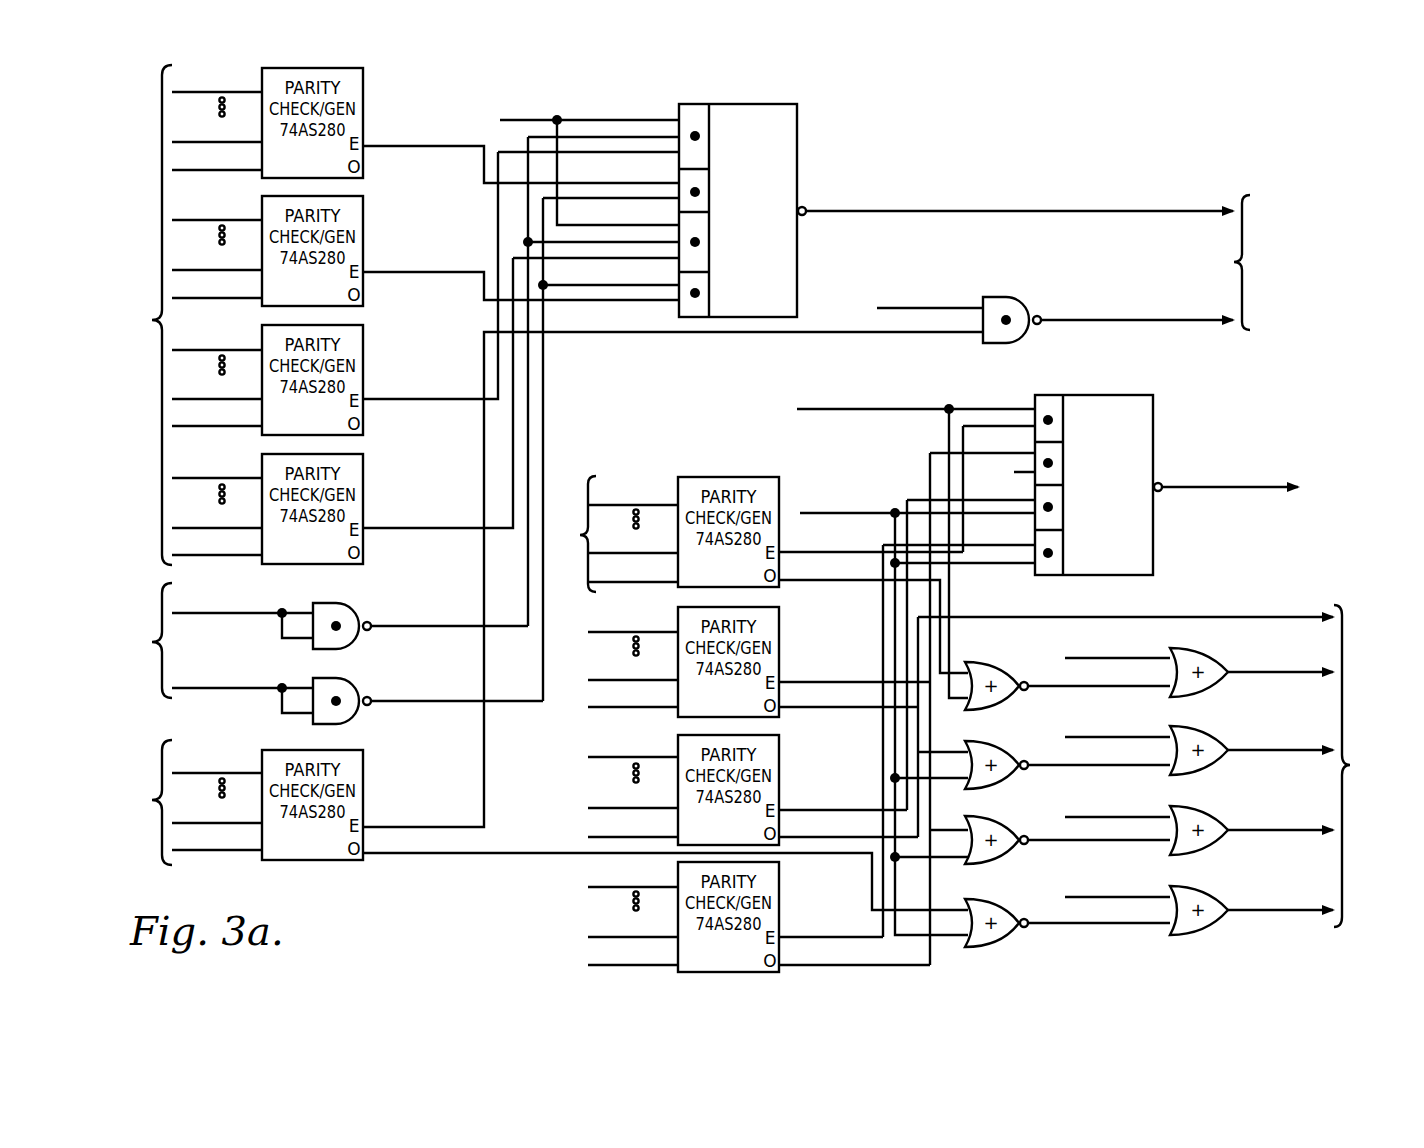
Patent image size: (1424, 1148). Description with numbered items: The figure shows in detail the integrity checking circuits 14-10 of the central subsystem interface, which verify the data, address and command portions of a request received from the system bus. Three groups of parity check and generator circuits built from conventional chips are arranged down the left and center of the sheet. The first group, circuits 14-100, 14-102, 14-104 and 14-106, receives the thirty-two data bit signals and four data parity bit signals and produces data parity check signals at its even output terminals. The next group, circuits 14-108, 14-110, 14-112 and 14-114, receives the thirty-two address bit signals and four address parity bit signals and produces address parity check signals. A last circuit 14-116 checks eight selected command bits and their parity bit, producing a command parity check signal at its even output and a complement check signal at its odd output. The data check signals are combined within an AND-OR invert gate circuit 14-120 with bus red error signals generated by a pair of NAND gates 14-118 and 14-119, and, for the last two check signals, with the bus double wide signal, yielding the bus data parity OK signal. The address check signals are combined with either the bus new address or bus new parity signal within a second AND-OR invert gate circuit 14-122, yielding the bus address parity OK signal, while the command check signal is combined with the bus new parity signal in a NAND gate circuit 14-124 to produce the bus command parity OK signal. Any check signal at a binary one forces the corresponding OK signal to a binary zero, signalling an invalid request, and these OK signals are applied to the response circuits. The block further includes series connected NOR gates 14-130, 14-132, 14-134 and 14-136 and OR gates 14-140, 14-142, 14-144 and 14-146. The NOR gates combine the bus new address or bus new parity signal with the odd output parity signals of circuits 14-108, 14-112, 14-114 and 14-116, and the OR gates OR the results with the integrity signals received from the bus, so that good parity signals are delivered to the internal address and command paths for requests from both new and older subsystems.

The integrity checking circuits 14-10 is at (1057, 155).
The 74AS280 parity check and generator circuit 14-100 is at (363, 91).
The 74AS280 parity check and generator circuit 14-102 is at (363, 218).
The 74AS280 parity check and generator circuit 14-104 is at (363, 347).
The 74AS280 parity check and generator circuit 14-106 is at (363, 475).
The 74AS280 parity check/generator circuit 14-108 is at (781, 478).
The 74AS280 parity check/generator circuit 14-110 is at (781, 641).
The 74AS280 parity check/generator circuit 14-112 is at (781, 752).
The 74AS280 parity check/generator circuit 14-114 is at (781, 884).
The 74AS280 parity check/generator circuit 14-116 is at (363, 760).
The NAND gate 14-118 is at (355, 604).
The NAND gate 14-119 is at (355, 679).
The AND-OR invert gate circuit 14-120 is at (800, 130).
The AND-OR invert gate circuit 14-122 is at (1155, 416).
The NAND gate circuit 14-124 is at (1007, 296).
The NOR gate 14-130 is at (980, 662).
The NOR gate 14-132 is at (970, 741).
The NOR gate 14-134 is at (972, 804).
The NOR gate 14-136 is at (972, 891).
The OR gate 14-140 is at (1220, 689).
The OR gate 14-142 is at (1220, 768).
The OR gate 14-144 is at (1220, 847).
The OR gate 14-146 is at (1220, 927).